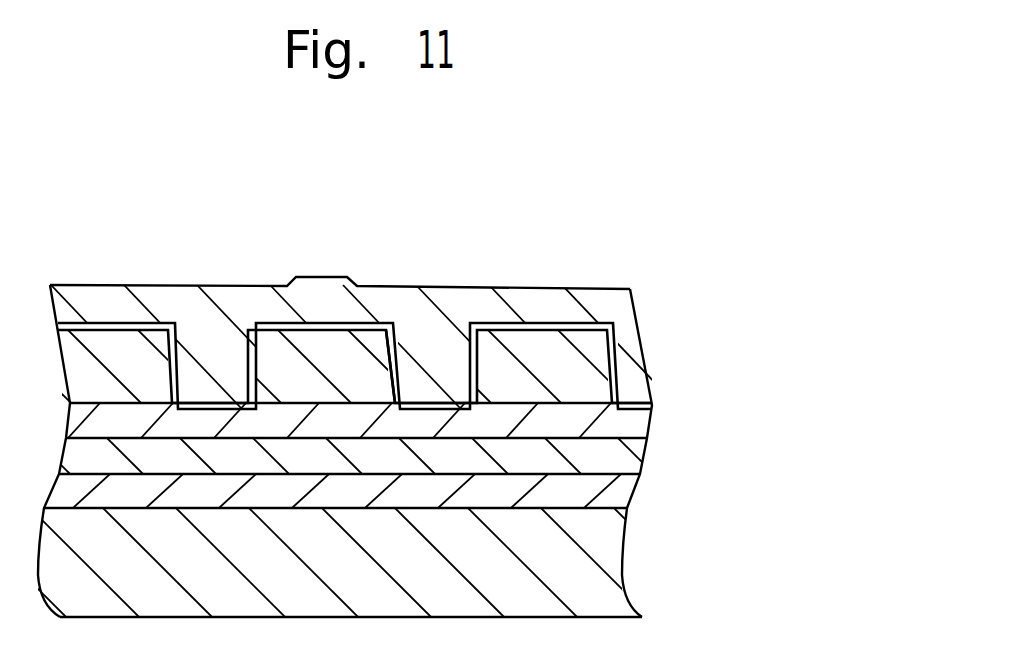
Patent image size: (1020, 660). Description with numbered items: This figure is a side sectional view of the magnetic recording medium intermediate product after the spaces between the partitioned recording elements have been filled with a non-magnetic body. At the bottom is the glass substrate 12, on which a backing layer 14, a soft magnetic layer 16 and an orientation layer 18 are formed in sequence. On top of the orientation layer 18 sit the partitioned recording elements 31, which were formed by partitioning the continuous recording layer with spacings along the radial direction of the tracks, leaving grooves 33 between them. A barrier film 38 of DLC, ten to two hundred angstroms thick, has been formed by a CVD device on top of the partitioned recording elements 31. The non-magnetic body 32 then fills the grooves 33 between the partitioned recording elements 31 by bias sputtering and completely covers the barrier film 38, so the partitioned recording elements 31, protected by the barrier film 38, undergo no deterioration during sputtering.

The glass substrate 12 is at (622, 548).
The backing layer 14 is at (632, 494).
The soft magnetic layer 16 is at (646, 462).
The orientation layer 18 is at (652, 427).
The partitioned recording elements 31 is at (103, 348).
The non-magnetic body 32 is at (377, 297).
The grooves 33 is at (178, 345).
The barrier film 38 is at (408, 355).